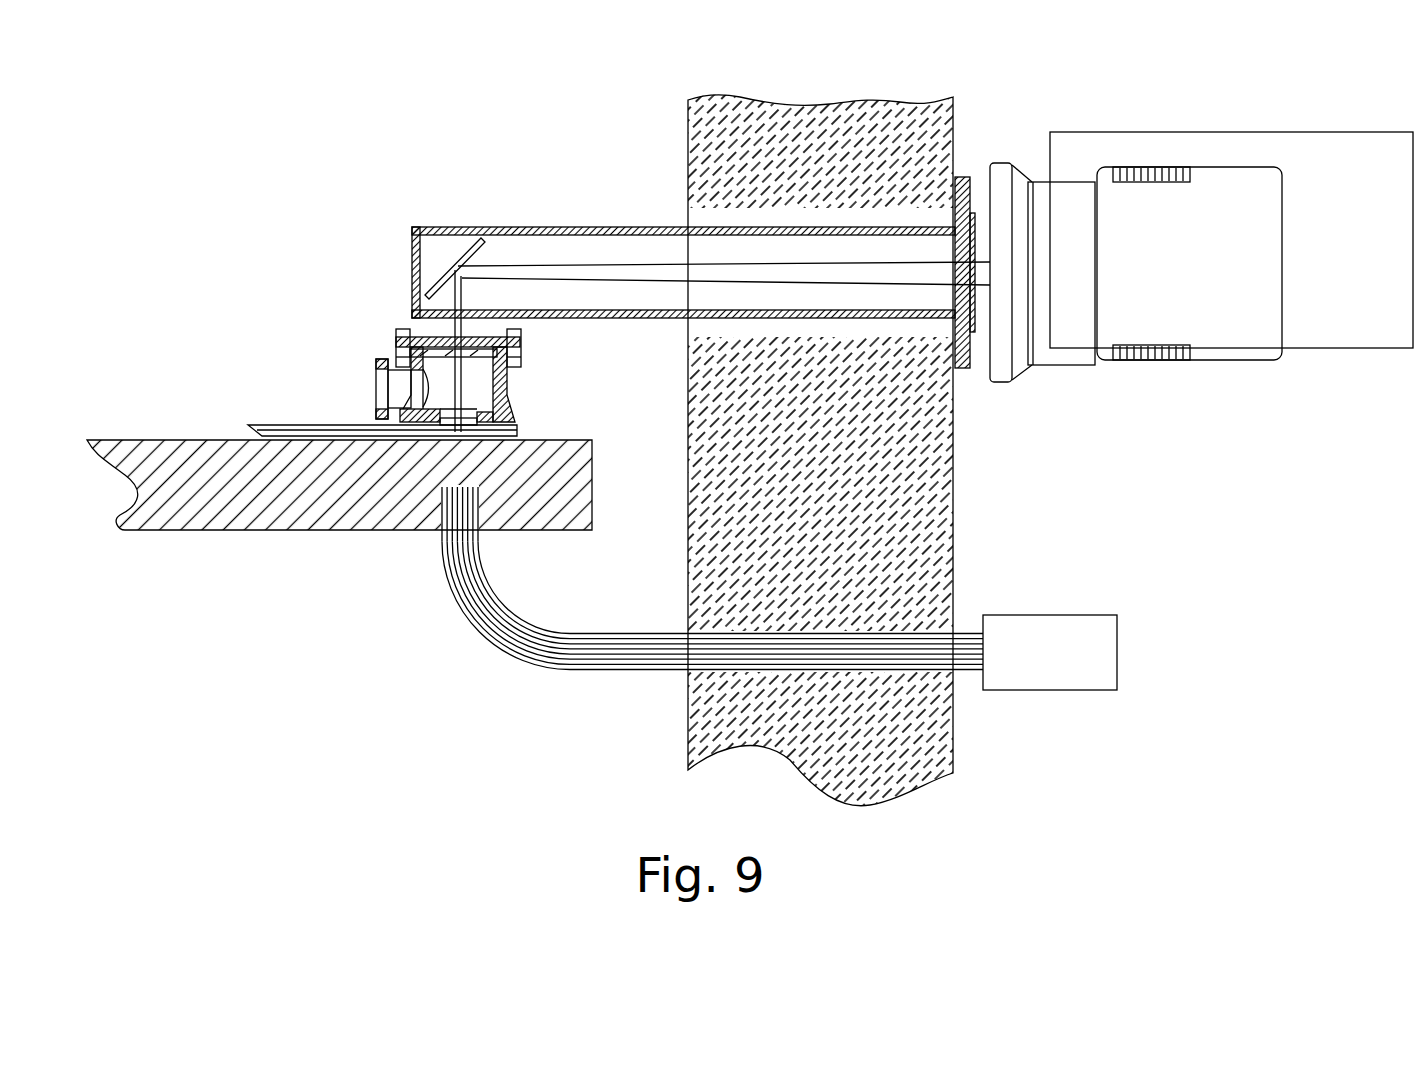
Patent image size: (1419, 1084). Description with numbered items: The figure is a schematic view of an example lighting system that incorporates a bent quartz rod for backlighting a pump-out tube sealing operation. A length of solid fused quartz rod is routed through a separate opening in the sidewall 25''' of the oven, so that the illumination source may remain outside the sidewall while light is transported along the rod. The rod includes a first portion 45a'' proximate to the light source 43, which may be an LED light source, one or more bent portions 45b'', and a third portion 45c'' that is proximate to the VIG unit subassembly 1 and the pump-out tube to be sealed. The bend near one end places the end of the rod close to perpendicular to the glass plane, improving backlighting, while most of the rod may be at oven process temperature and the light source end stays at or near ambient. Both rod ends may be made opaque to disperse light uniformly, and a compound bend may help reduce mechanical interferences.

The VIG unit subassembly 1 is at (288, 423).
The sidewall 25''' is at (866, 450).
The light source 43 is at (1064, 625).
The first portion 45a'' is at (811, 700).
The bent portions 45b'' is at (535, 606).
The third portion 45c'' is at (406, 546).